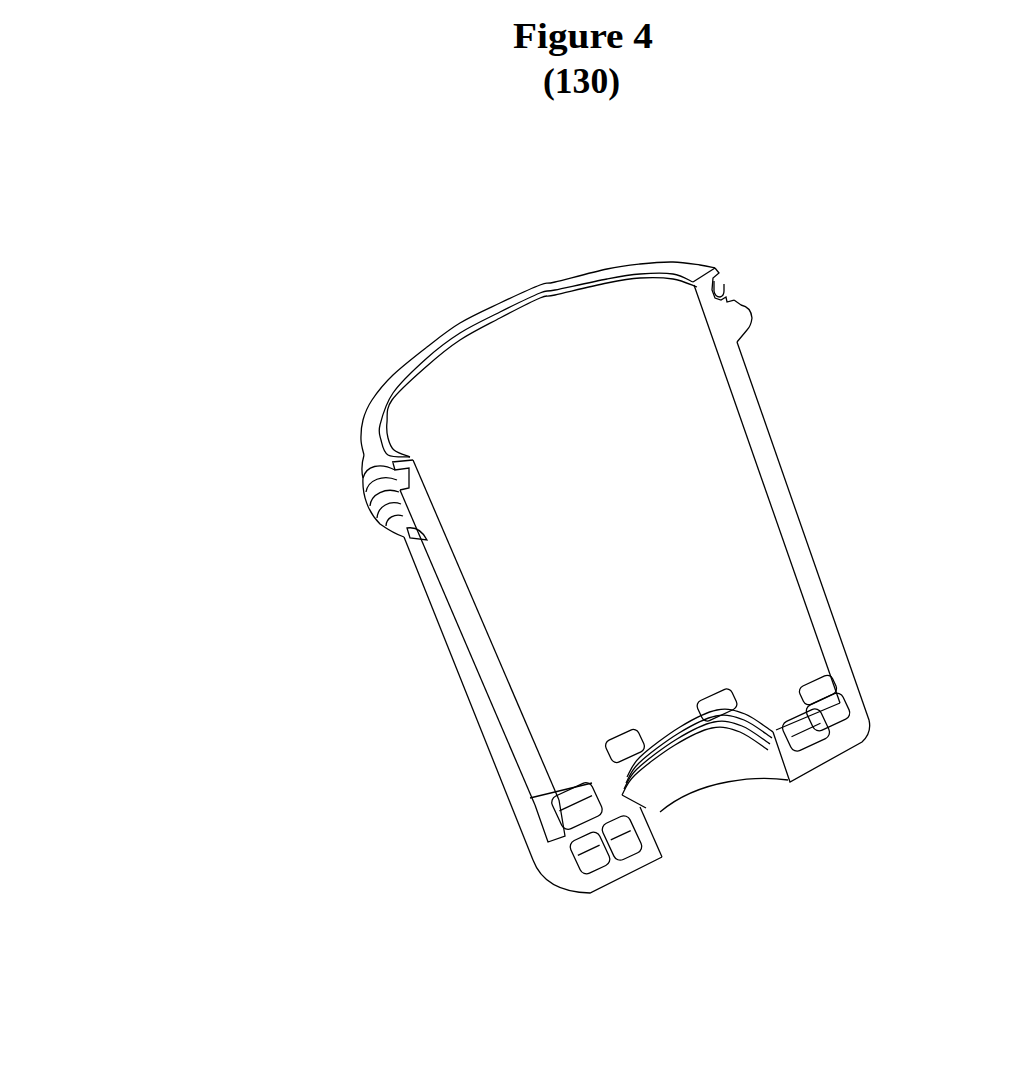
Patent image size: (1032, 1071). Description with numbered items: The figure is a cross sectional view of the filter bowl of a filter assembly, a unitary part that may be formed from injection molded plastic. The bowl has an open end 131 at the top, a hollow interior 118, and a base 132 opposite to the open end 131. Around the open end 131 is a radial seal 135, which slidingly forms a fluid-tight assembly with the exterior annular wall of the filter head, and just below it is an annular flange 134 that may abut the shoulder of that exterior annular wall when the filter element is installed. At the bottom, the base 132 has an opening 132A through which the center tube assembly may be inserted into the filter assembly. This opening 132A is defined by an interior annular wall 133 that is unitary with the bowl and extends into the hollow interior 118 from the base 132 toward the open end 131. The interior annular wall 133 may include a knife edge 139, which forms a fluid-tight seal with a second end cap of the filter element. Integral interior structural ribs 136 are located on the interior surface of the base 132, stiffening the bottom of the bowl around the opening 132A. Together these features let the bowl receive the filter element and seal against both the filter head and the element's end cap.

The hollow interior 118 is at (517, 388).
The open end 131 is at (688, 260).
The radial seal 135 is at (718, 287).
The annular flange 134 is at (748, 315).
The knife edge 139 is at (778, 720).
The base 132 is at (820, 765).
The opening 132A is at (705, 780).
The interior annular wall 133 is at (634, 827).
The integral interior structural ribs 136 is at (602, 850).